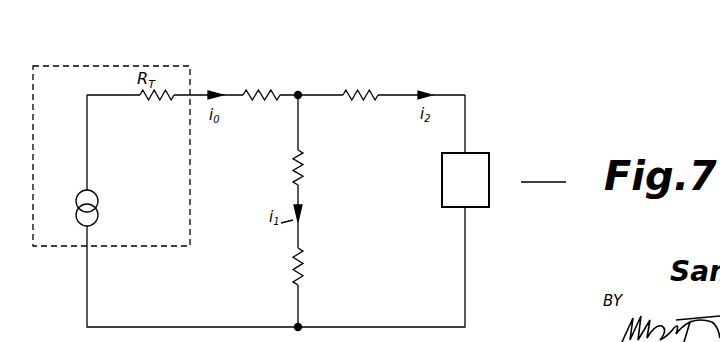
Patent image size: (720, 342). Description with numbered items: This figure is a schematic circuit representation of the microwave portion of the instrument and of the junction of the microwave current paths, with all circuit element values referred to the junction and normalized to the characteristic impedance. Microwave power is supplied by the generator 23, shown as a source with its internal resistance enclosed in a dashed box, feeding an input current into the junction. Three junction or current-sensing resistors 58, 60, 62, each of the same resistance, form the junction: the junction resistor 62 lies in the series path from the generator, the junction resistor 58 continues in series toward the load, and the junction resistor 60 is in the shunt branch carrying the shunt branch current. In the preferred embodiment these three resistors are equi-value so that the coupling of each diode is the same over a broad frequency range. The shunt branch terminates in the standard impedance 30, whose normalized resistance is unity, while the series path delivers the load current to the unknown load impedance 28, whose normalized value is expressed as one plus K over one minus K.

The generator 23 is at (192, 184).
The junction resistor 62 is at (257, 103).
The junction resistor 58 is at (367, 103).
The junction resistor 60 is at (305, 165).
The standard impedance 30 is at (305, 280).
The unknown load impedance 28 is at (485, 157).